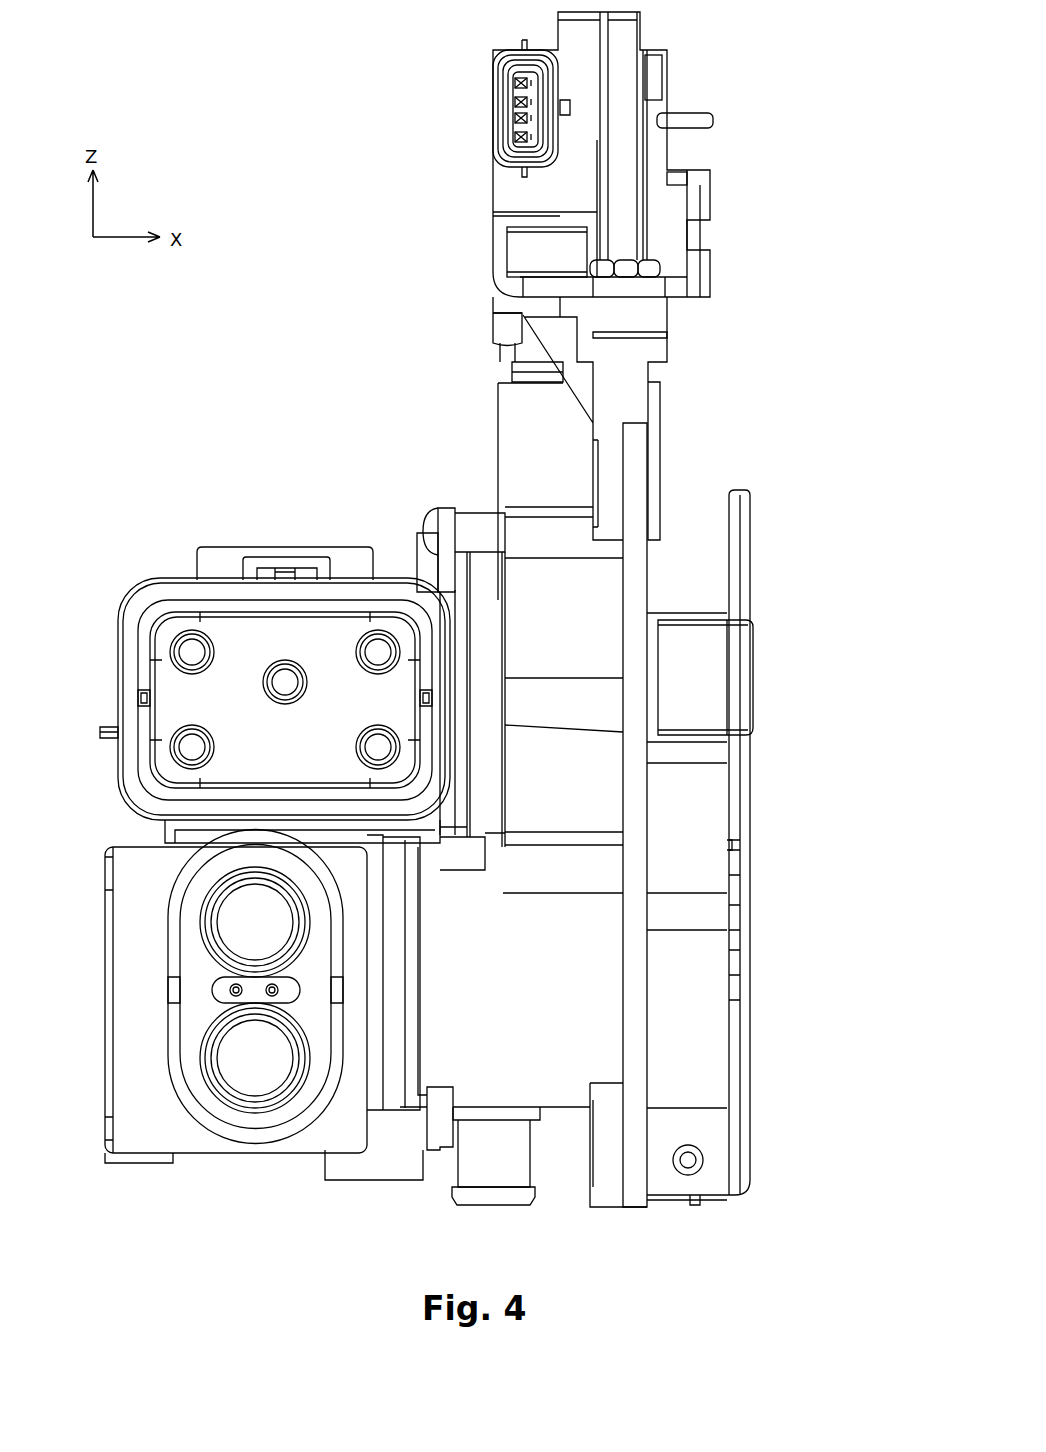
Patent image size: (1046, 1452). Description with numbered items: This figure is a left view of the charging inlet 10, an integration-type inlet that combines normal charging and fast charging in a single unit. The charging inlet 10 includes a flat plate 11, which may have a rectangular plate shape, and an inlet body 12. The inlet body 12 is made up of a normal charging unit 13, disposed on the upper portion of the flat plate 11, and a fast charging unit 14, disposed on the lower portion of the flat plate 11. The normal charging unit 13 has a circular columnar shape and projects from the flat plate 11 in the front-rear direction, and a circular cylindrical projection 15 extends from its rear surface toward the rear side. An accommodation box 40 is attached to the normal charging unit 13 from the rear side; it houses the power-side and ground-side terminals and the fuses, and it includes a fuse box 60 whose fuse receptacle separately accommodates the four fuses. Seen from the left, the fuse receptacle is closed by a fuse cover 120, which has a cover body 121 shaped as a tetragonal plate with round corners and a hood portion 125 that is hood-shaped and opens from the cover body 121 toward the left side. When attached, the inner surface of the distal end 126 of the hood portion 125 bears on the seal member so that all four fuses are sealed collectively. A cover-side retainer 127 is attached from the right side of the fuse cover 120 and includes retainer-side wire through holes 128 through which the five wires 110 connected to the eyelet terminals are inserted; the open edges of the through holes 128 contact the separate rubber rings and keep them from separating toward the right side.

The charging inlet 10 is at (779, 66).
The flat plate 11 is at (635, 1130).
The inlet body 12 is at (828, 1000).
The normal charging unit 13 is at (775, 702).
The fast charging unit 14 is at (775, 990).
The circular cylindrical projection 15 is at (483, 572).
The accommodation box 40 is at (275, 424).
The fuse box 60 is at (285, 563).
The wire 110 is at (378, 747).
The fuse cover 120 is at (106, 584).
The cover body 121 is at (255, 605).
The hood portion 125 is at (147, 606).
The distal end 126 is at (157, 582).
The cover-side retainer 127 is at (168, 687).
The retainer-side wire through holes 128 is at (178, 742).